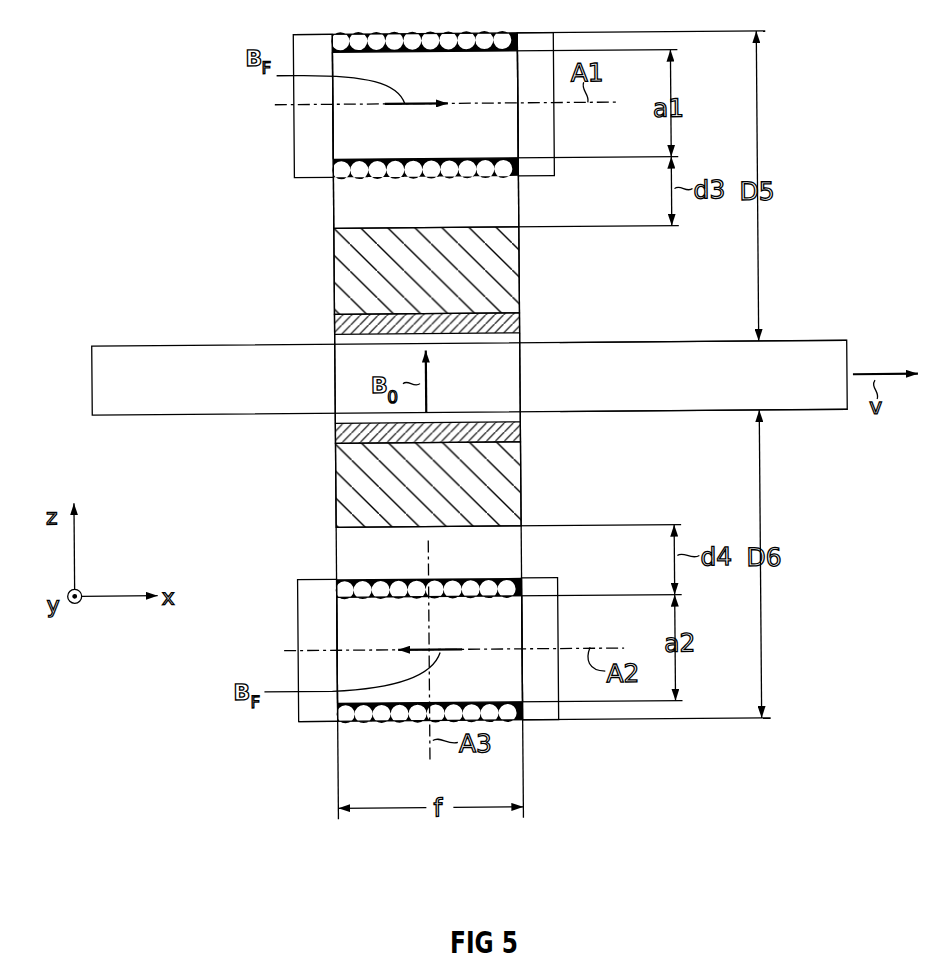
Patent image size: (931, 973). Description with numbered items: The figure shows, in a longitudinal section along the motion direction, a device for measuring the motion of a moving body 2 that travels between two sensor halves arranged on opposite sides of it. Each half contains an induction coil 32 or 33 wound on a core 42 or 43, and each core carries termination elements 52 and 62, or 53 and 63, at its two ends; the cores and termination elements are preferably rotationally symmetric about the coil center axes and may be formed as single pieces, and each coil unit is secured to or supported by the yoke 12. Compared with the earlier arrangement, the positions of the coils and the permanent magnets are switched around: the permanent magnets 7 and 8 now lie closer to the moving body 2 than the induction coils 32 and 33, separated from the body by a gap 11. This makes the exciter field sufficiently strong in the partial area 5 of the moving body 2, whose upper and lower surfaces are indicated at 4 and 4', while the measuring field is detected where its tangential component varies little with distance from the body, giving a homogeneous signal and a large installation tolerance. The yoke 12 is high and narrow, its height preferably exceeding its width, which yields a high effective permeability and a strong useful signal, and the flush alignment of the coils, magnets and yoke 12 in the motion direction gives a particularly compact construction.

The moving body 2 is at (108, 385).
The upper surface of substrate 4 is at (702, 317).
The lower surface of substrate 4' is at (707, 434).
The partial area 5 is at (482, 381).
The permanent magnet 7 is at (500, 328).
The permanent magnet 8 is at (506, 432).
The gap 11 is at (372, 203).
The yoke 12 is at (505, 272).
The induction coil 32 is at (372, 178).
The induction coil 33 is at (373, 578).
The core 42 is at (357, 125).
The core 43 is at (365, 627).
The termination element 52 is at (310, 163).
The termination element 53 is at (315, 589).
The termination element 62 is at (543, 140).
The termination element 63 is at (548, 617).